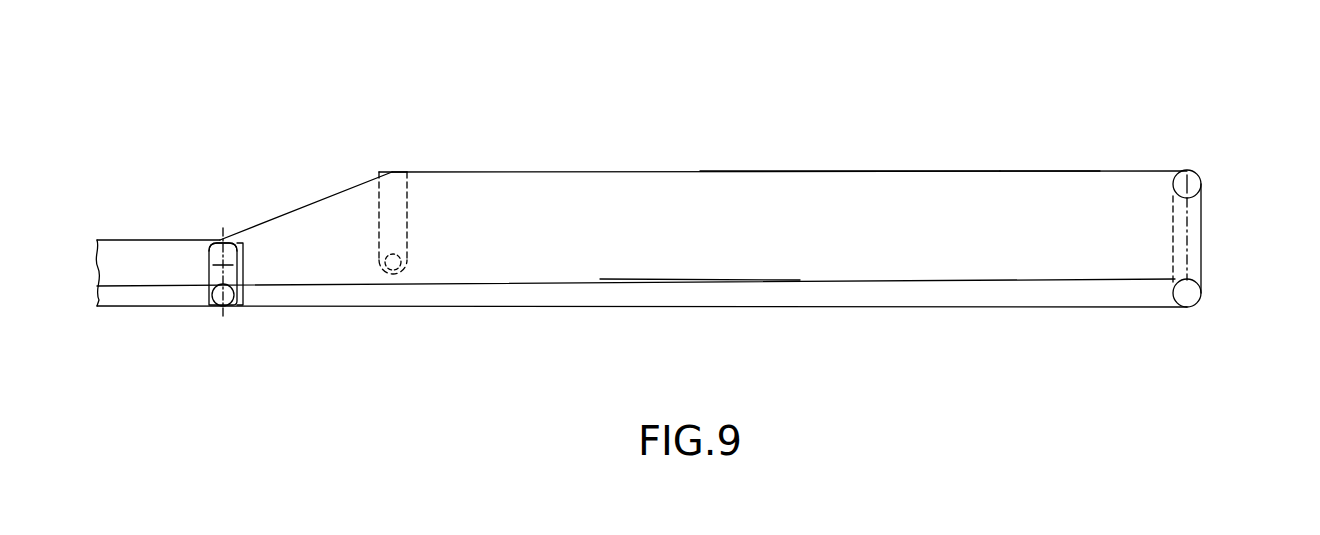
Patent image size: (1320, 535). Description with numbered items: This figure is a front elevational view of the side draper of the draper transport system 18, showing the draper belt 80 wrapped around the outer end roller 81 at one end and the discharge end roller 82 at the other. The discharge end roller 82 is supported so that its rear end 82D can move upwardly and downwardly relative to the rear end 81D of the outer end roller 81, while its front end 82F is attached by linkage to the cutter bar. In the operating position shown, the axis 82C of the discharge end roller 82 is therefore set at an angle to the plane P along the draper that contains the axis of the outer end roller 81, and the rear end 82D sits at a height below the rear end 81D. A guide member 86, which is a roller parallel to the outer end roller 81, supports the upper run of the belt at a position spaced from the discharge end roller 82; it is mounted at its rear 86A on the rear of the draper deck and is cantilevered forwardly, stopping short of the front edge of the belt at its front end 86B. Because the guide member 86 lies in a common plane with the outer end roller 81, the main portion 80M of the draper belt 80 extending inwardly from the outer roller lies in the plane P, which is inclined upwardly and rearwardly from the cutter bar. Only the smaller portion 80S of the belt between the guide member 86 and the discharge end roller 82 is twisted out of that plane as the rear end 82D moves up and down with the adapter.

The draper transport system 18 is at (1039, 157).
The draper belt 80 is at (1073, 242).
The main portion of the draper belt 80M is at (873, 222).
The smaller portion of the draper belt 80S is at (328, 222).
The outer end roller 81 is at (1185, 225).
The rear end of the outer end roller 81D is at (1190, 168).
The discharge end roller 82 is at (227, 312).
The axis of the discharge end roller 82C is at (227, 265).
The rear end of the discharge end roller 82D is at (217, 240).
The front end of the discharge end roller 82F is at (214, 306).
The guide member 86 is at (395, 232).
The rear of the guide member 86A is at (392, 172).
The front end of the guide member 86B is at (393, 266).
The plane P is at (698, 240).